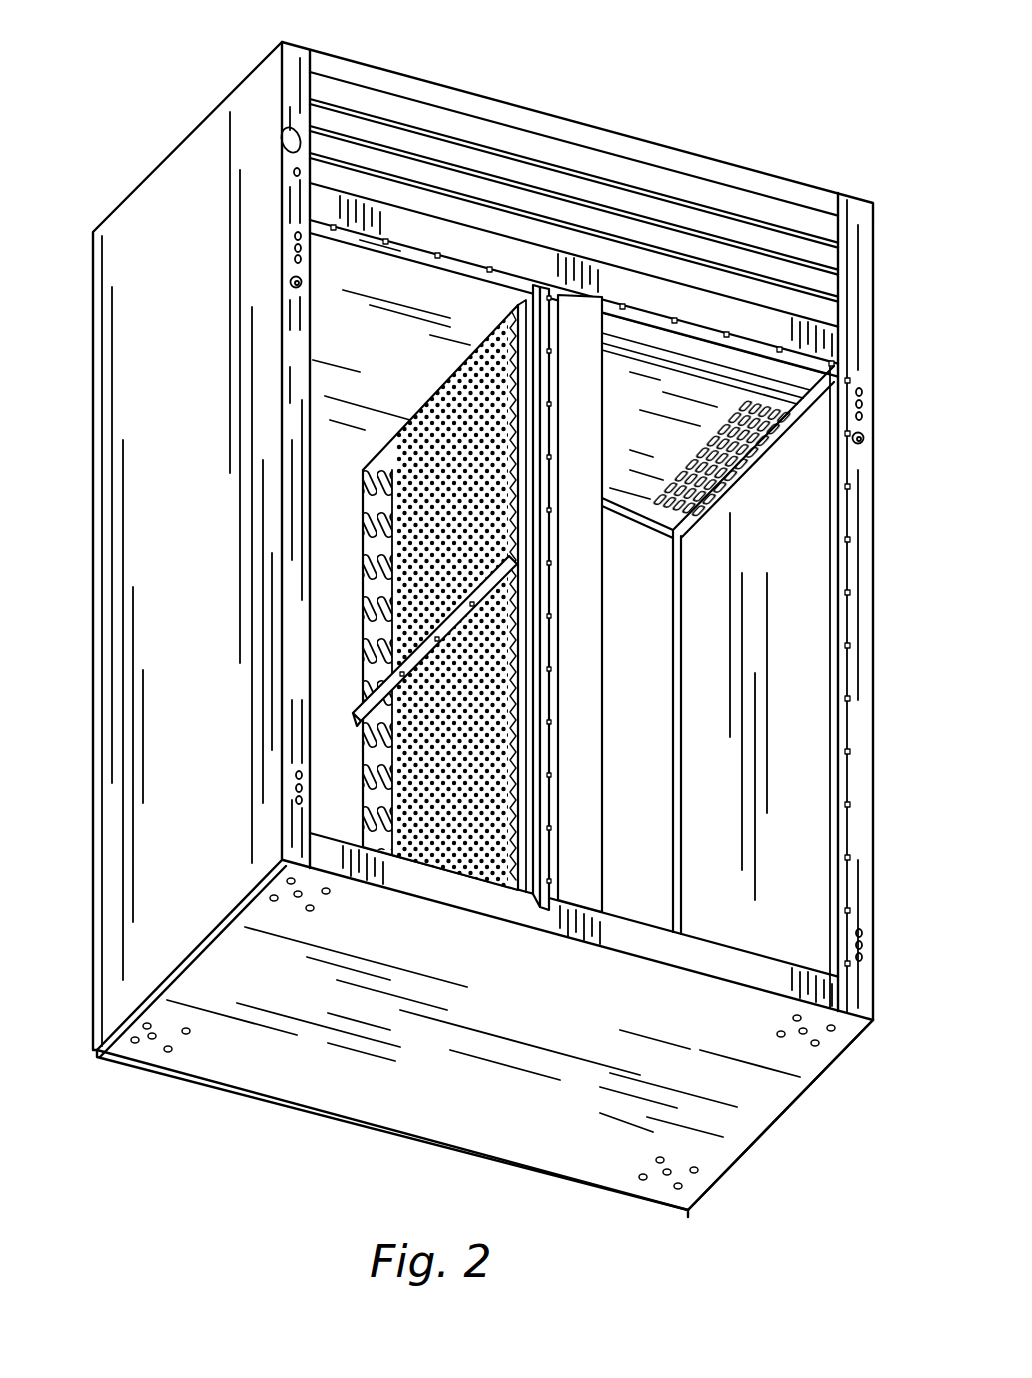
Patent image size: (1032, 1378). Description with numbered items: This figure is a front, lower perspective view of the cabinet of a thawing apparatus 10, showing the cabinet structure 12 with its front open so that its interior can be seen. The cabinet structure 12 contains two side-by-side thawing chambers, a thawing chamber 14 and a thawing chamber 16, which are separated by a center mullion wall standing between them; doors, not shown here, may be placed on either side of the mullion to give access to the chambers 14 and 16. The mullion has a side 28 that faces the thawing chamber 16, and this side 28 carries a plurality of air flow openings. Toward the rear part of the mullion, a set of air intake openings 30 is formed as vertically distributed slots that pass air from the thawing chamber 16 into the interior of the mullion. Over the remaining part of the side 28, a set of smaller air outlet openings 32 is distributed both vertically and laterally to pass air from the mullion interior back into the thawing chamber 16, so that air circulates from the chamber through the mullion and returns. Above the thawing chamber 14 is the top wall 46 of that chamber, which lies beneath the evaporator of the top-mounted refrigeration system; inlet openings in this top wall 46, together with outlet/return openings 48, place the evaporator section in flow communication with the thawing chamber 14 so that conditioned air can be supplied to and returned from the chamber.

The thawing apparatus 10 is at (745, 95).
The cabinet structure 12 is at (203, 843).
The thawing chamber 14 is at (700, 760).
The thawing chamber 16 is at (338, 665).
The opposite side of the mullion 28 is at (462, 395).
The air intake openings 30 is at (363, 602).
The air outlet openings 32 is at (455, 487).
The top wall 46 is at (653, 423).
The outlet/return openings 48 is at (752, 462).